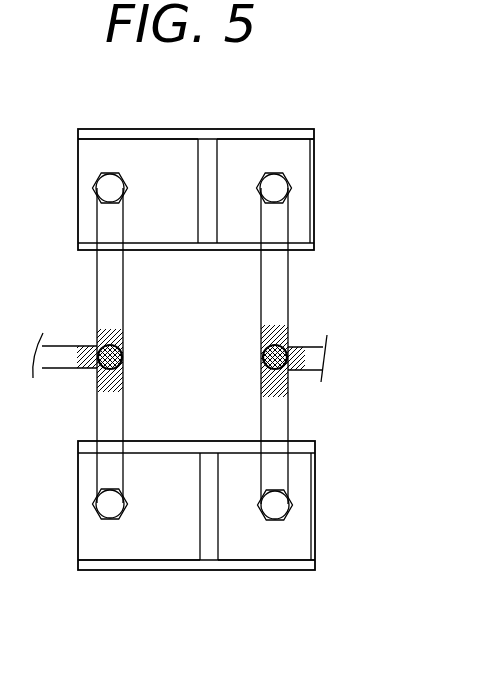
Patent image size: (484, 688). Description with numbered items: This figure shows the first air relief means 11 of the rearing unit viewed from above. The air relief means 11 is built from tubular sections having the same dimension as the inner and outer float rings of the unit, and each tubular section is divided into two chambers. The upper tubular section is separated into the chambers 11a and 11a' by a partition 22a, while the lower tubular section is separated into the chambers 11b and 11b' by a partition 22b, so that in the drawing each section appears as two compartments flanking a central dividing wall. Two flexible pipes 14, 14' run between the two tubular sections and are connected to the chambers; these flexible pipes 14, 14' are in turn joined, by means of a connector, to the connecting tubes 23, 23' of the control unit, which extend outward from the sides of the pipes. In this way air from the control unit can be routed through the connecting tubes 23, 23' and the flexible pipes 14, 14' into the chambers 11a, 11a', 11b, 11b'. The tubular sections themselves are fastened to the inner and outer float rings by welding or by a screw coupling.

The air relief means 11 is at (312, 124).
The chamber 11a is at (265, 107).
The chamber 11a' is at (138, 103).
The chamber 11b is at (266, 581).
The chamber 11b' is at (139, 581).
The partition 22a is at (190, 153).
The partition 22b is at (201, 543).
The flexible pipe 14 is at (312, 346).
The flexible pipe 14' is at (75, 346).
The connecting tube 23 is at (324, 335).
The connecting tube 23' is at (71, 332).